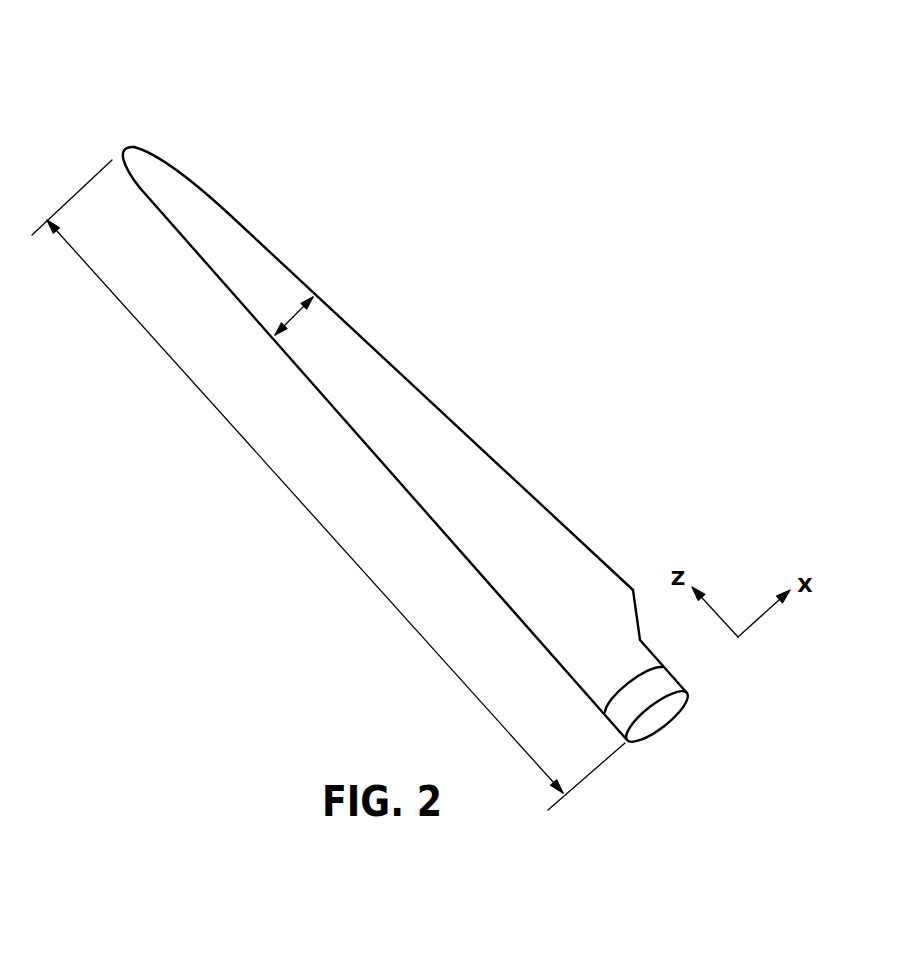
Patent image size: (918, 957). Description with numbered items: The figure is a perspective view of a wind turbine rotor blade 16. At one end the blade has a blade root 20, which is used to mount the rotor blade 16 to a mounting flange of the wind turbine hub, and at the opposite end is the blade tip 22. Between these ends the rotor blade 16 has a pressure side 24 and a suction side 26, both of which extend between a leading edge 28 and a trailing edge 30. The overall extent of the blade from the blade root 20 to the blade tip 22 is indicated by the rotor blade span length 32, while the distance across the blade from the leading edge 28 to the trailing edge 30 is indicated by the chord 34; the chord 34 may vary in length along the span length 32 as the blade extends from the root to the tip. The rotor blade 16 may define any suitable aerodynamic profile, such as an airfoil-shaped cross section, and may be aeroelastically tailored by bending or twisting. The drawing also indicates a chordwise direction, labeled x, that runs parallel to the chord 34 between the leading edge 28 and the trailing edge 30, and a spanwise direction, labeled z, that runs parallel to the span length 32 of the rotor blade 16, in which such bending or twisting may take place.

The wind turbine rotor blade 16 is at (420, 421).
The blade root 20 is at (650, 694).
The blade tip 22 is at (127, 147).
The pressure side 24 is at (507, 553).
The suction side 26 is at (418, 413).
The leading edge 28 is at (343, 422).
The trailing edge 30 is at (262, 247).
The rotor blade span length 32 is at (257, 455).
The chord 34 is at (293, 316).